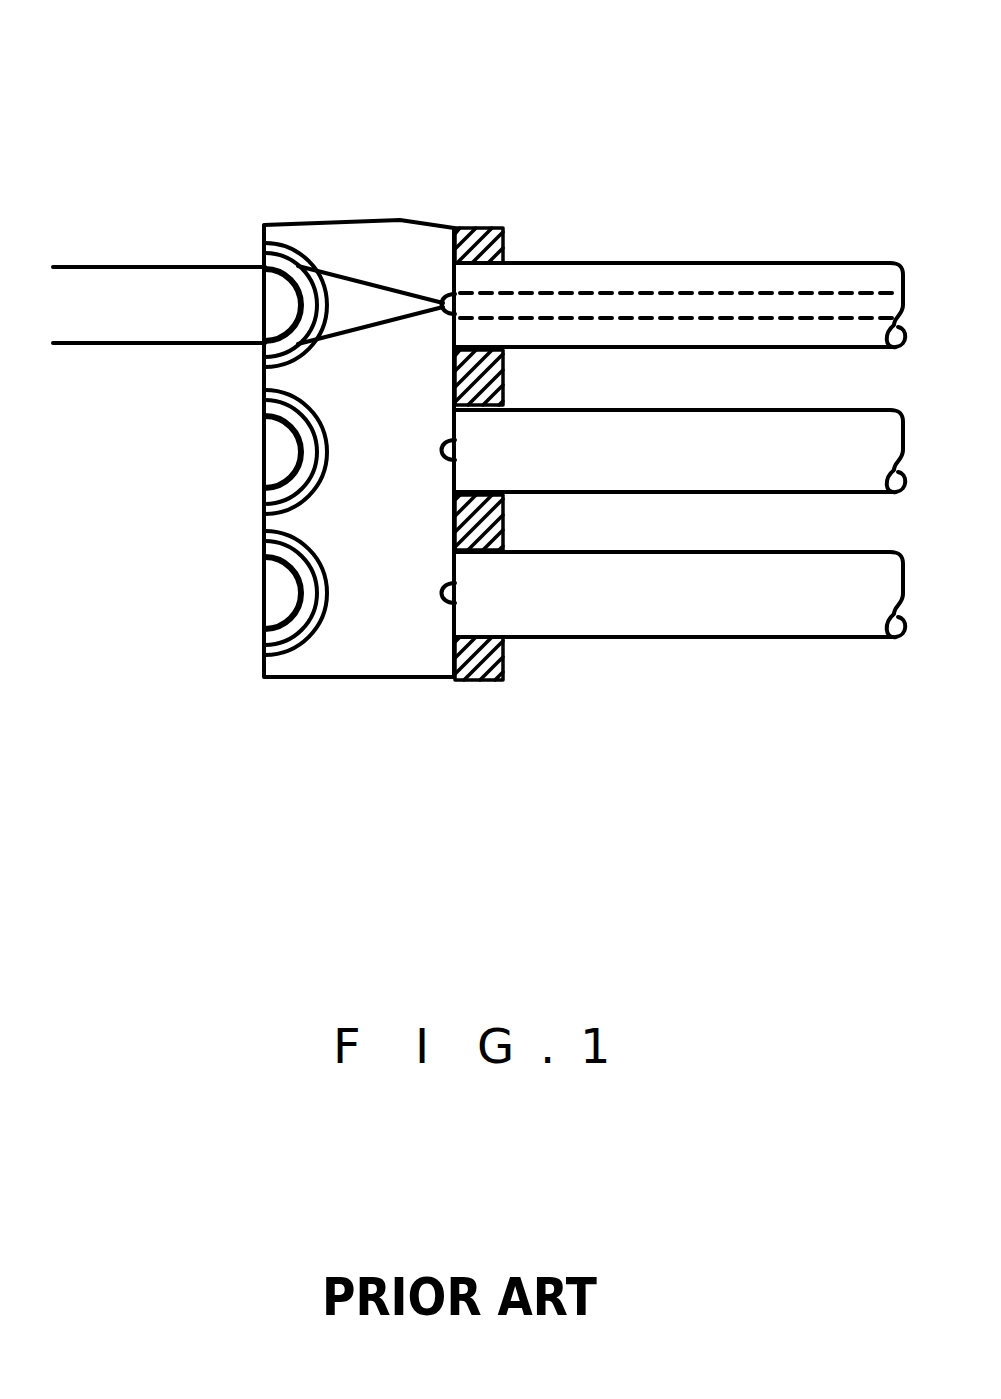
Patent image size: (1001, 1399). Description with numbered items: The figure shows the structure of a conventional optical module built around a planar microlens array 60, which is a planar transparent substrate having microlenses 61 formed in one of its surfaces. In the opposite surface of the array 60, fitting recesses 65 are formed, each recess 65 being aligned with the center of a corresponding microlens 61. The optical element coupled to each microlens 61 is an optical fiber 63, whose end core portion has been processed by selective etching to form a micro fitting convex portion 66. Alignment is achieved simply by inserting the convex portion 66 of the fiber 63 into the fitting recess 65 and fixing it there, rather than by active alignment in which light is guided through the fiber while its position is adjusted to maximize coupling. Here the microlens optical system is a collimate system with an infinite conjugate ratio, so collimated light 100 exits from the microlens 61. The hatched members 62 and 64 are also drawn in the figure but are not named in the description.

The collimated light 100 is at (127, 287).
The planar microlens array 60 is at (363, 653).
The microlens 61 is at (282, 600).
The spacer member 62 is at (505, 231).
The optical fiber 63 is at (768, 262).
The adhesive layer 64 is at (490, 352).
The fitting recess 65 is at (443, 303).
The micro fitting convex portion 66 is at (456, 593).